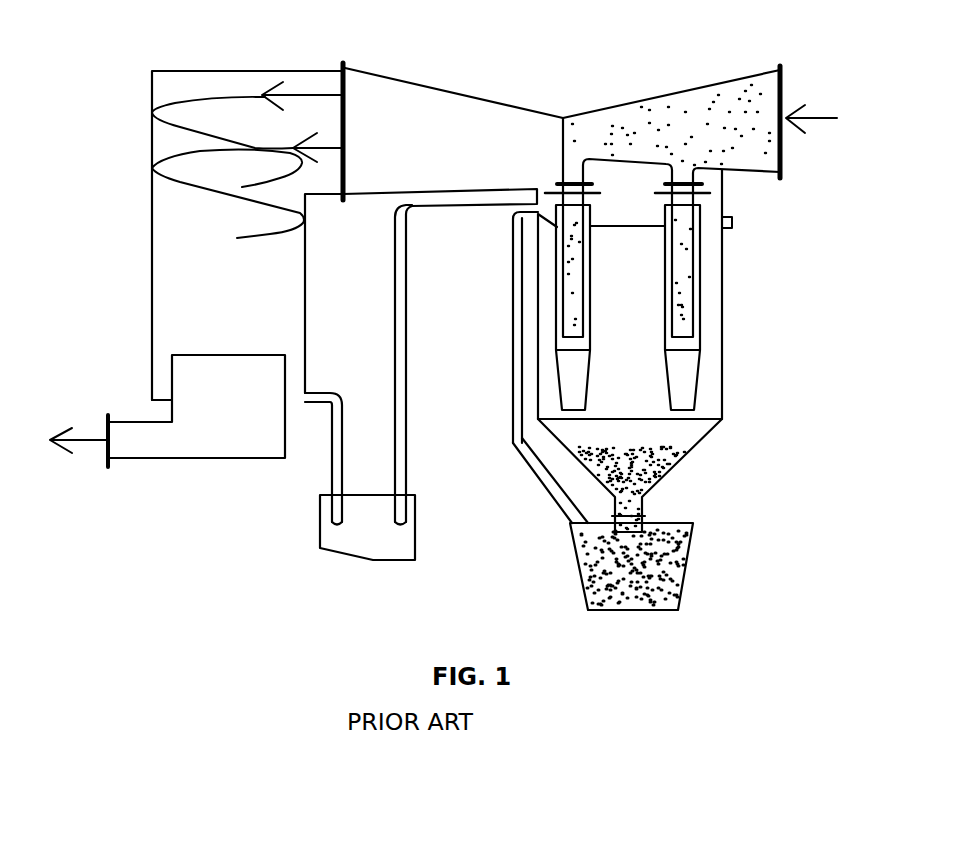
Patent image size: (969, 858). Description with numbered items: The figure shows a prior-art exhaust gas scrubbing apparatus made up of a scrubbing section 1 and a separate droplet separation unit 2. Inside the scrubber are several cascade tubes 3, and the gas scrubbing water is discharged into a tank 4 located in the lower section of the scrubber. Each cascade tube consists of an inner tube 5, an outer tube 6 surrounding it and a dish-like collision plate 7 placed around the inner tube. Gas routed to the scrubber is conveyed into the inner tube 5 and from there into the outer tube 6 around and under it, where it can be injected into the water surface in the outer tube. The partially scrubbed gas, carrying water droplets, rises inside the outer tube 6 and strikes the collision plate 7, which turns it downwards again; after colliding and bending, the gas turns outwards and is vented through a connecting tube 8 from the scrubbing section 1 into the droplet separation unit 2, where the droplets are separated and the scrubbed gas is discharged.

The scrubbing section 1 is at (722, 337).
The droplet separation unit 2 is at (152, 218).
The cascade tubes 3 is at (700, 262).
The tank 4 is at (680, 545).
The inner tube 5 is at (678, 283).
The outer tube 6 is at (687, 372).
The collision plate 7 is at (702, 197).
The connecting tube 8 is at (452, 107).